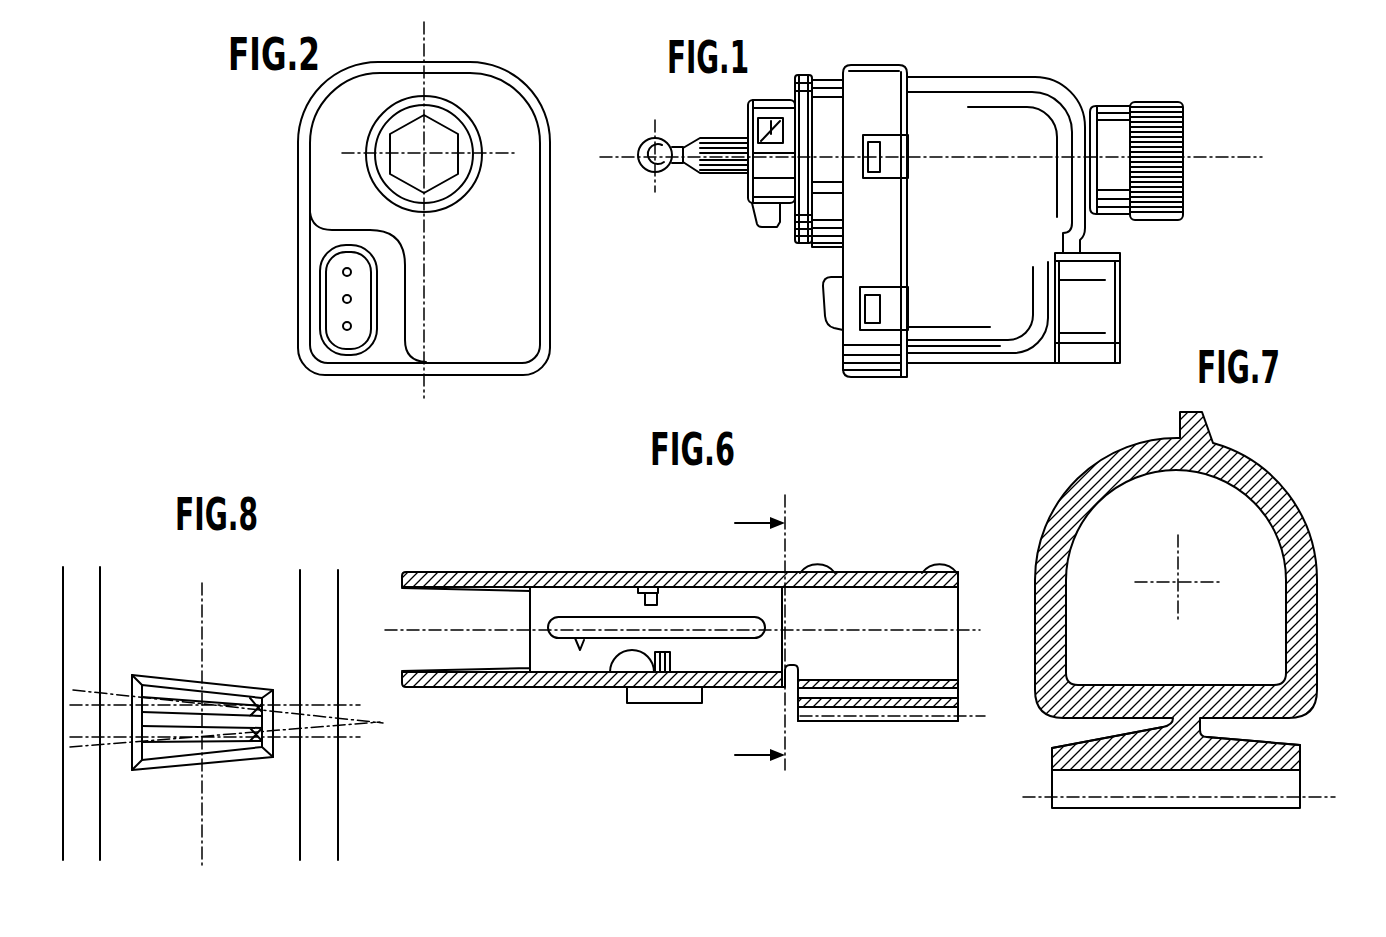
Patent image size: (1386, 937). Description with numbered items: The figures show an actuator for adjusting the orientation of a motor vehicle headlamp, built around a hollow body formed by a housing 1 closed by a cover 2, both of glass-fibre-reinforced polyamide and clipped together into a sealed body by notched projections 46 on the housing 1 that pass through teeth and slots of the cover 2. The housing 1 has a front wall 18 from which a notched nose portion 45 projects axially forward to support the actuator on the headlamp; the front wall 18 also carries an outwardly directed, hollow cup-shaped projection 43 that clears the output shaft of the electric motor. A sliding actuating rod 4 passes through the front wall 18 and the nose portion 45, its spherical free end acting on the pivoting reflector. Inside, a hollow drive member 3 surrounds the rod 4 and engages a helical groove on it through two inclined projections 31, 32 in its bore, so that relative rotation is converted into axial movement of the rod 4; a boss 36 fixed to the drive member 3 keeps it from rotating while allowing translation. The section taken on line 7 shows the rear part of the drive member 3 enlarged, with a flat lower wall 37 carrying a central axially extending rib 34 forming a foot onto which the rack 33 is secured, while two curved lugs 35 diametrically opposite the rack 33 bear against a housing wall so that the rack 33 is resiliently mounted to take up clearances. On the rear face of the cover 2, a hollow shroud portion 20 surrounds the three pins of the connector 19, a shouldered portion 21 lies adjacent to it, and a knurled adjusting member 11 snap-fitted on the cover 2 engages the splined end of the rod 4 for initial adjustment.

In FIG. 1, the housing 1 is at (836, 343).
In FIG. 2, the cover 2 is at (546, 320).
In FIG. 1, the cover 2 is at (1065, 84).
In FIG. 6, the drive member 3 is at (496, 573).
In FIG. 1, the actuating rod 4 is at (658, 174).
In FIG. 6, the section line 7- 7 is at (748, 634).
In FIG. 2, the adjusting member 11 is at (366, 160).
In FIG. 1, the adjusting member 11 is at (1173, 99).
In FIG. 1, the front wall 18 is at (840, 249).
In FIG. 2, the connector 19 is at (347, 327).
In FIG. 2, the shroud portion 20 is at (323, 290).
In FIG. 1, the shroud portion 20 is at (1078, 345).
In FIG. 2, the shouldered portion 21 is at (383, 325).
In FIG. 6, the projection 31 is at (640, 603).
In FIG. 8, the projection 31 is at (247, 682).
In FIG. 6, the projection 32 is at (613, 673).
In FIG. 8, the projection 32 is at (218, 765).
In FIG. 6, the rack 33 is at (834, 722).
In FIG. 7, the rack 33 is at (1072, 809).
In FIG. 7, the rib 34 is at (1167, 720).
In FIG. 6, the curved lugs 35 is at (935, 566).
In FIG. 7, the curved lugs 35 is at (1200, 426).
In FIG. 6, the boss 36 is at (680, 704).
In FIG. 7, the flat lower wall 37 is at (1277, 745).
In FIG. 1, the cup-shaped projection 43 is at (820, 297).
In FIG. 1, the nose portion 45 is at (760, 223).
In FIG. 1, the notched projections 46 is at (873, 312).